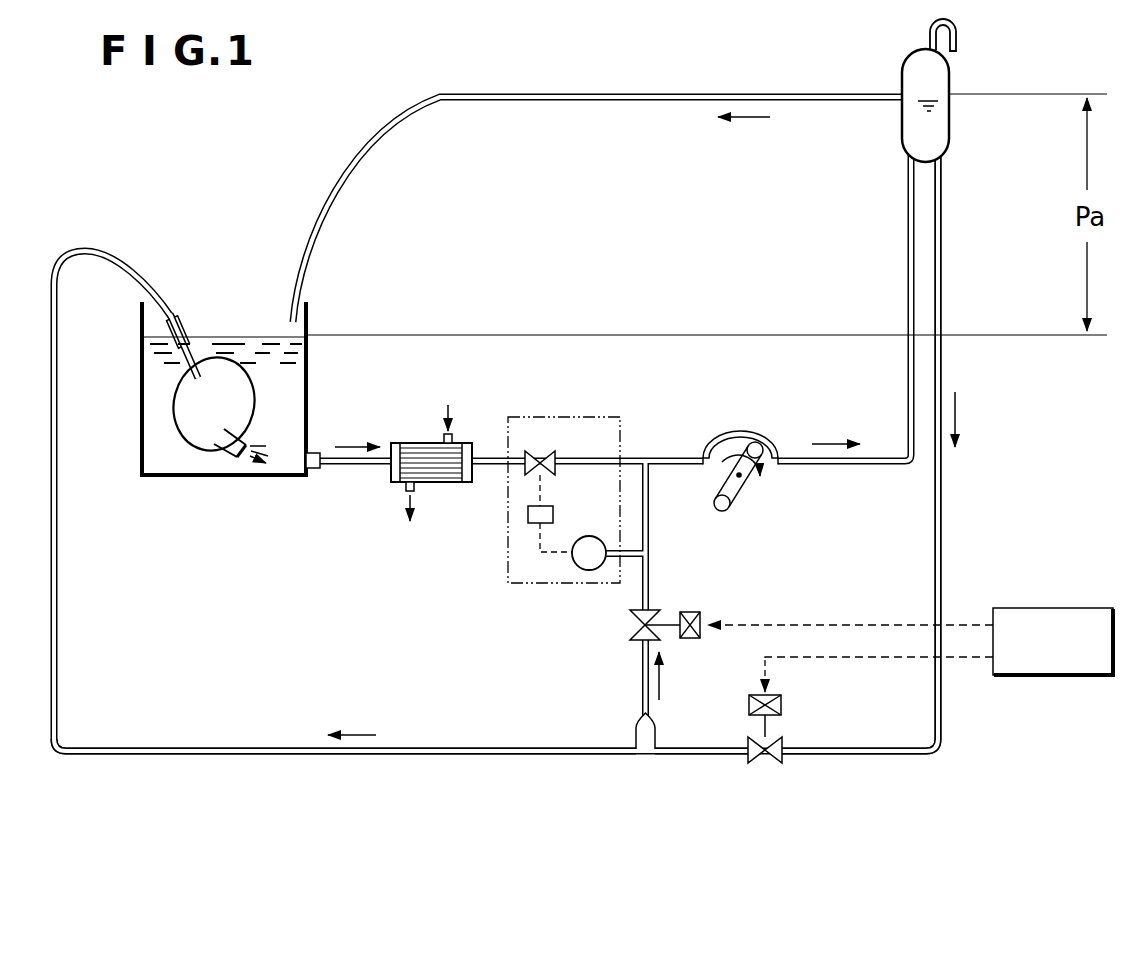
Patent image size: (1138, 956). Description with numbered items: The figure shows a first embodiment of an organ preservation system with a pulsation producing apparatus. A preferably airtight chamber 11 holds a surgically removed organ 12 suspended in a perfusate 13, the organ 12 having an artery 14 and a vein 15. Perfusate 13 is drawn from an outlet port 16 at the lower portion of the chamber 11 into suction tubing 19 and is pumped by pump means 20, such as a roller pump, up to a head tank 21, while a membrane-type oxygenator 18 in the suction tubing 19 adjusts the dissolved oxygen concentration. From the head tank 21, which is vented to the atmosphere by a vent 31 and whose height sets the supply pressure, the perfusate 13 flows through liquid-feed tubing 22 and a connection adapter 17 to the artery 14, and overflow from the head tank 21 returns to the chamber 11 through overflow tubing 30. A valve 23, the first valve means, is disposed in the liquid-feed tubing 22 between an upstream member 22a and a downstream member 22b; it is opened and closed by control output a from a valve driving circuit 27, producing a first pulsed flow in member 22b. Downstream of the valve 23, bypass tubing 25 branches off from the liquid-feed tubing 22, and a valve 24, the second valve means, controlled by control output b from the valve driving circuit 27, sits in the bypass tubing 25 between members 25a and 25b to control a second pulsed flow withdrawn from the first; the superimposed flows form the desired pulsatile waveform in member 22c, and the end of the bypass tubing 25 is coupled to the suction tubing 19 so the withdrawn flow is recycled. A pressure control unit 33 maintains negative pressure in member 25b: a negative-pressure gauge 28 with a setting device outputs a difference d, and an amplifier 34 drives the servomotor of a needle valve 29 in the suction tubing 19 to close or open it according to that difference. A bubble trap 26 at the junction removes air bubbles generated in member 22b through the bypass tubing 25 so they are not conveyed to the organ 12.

The chamber 11 is at (307, 413).
The organ 12 is at (181, 412).
The perfusate 13 is at (278, 376).
The artery 14 is at (162, 354).
The vein 15 is at (226, 456).
The outlet port 16 is at (321, 458).
The connection adapter 17 is at (178, 318).
The membrane-type oxygenator 18 is at (446, 484).
The suction tubing 19 is at (350, 470).
The pump means 20 is at (770, 443).
The head tank 21 is at (952, 126).
The liquid-feed tubing 22 is at (785, 817).
The liquid-feed tubing member 22a is at (845, 757).
The liquid-feed tubing member 22b is at (707, 757).
The liquid-feed tubing member 22c is at (438, 757).
The valve 23 is at (783, 750).
The valve 24 is at (662, 627).
The bypass tubing 25 is at (495, 640).
The bypass tubing member 25a is at (640, 673).
The bypass tubing member 25b is at (632, 624).
The bubble trap 26 is at (656, 738).
The valve driving circuit 27 is at (1050, 676).
The negative-pressure gauge 28 is at (590, 571).
The valve 29 is at (538, 470).
The overflow tubing 30 is at (680, 93).
The vent 31 is at (960, 27).
The pressure control unit 33 is at (588, 417).
The amplifier 34 is at (555, 513).